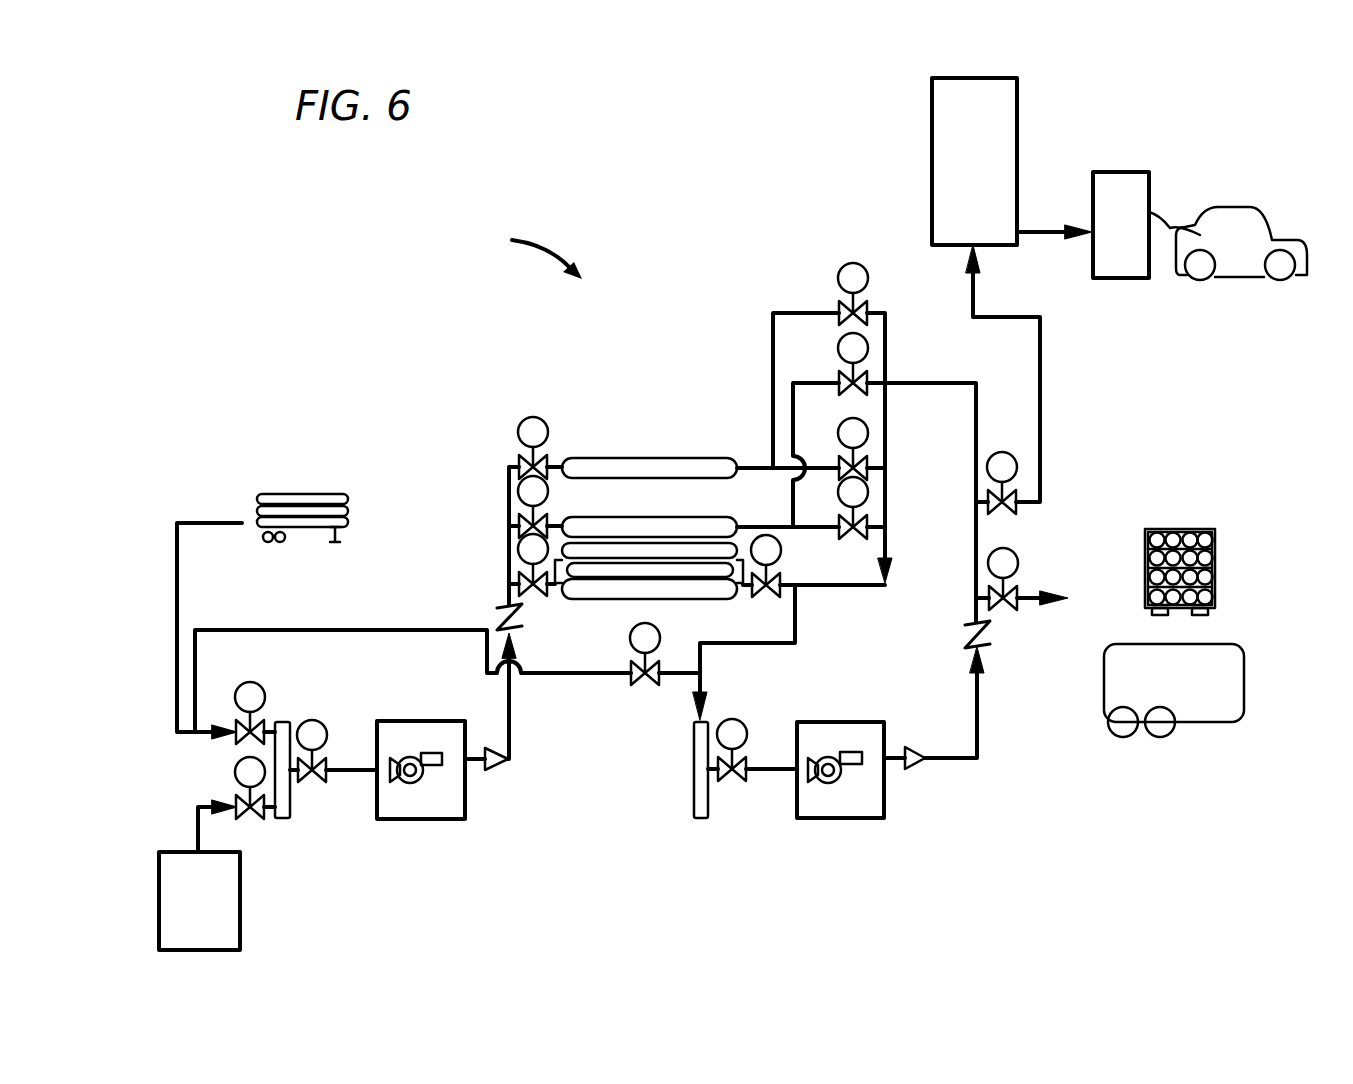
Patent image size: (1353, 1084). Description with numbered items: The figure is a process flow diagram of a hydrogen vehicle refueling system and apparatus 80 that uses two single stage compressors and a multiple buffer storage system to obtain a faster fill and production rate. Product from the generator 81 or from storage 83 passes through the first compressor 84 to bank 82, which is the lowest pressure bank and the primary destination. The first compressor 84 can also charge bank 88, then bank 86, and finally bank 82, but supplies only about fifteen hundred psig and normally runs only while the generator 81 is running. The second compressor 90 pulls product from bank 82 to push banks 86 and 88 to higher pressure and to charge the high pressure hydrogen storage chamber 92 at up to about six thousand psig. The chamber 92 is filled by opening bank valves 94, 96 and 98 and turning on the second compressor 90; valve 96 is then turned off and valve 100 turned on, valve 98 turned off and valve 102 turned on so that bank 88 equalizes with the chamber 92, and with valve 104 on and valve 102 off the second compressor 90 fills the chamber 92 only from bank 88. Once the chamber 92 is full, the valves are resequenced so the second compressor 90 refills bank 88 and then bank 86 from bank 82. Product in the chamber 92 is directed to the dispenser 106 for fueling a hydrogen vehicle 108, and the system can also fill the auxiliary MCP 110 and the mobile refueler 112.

The hydrogen vehicle refueling system and apparatus 80 is at (531, 253).
The generator 81 is at (158, 898).
The bank 82 is at (728, 560).
The storage 83 is at (297, 493).
The first compressor 84 is at (419, 820).
The bank 86 is at (597, 517).
The bank 88 is at (648, 457).
The second compressor 90 is at (840, 819).
The high pressure hydrogen storage chamber 92 is at (1019, 110).
The bank valve 94 is at (995, 452).
The bank valve 96 is at (838, 355).
The bank valve 98 is at (781, 551).
The valve 100 is at (841, 266).
The valve 102 is at (870, 500).
The valve 104 is at (869, 436).
The dispenser 106 is at (1117, 172).
The hydrogen vehicle 108 is at (1237, 280).
The MCP 110 is at (1215, 566).
The mobile refueler 112 is at (1244, 650).